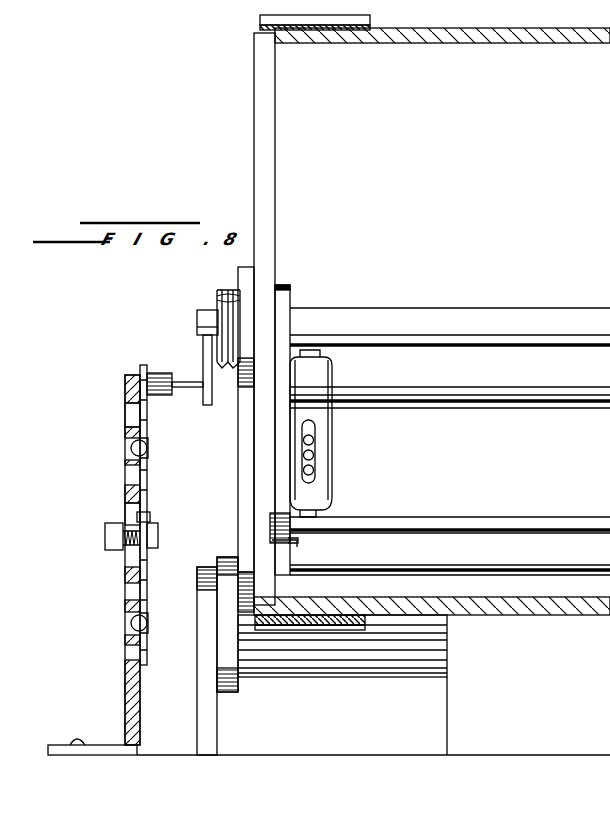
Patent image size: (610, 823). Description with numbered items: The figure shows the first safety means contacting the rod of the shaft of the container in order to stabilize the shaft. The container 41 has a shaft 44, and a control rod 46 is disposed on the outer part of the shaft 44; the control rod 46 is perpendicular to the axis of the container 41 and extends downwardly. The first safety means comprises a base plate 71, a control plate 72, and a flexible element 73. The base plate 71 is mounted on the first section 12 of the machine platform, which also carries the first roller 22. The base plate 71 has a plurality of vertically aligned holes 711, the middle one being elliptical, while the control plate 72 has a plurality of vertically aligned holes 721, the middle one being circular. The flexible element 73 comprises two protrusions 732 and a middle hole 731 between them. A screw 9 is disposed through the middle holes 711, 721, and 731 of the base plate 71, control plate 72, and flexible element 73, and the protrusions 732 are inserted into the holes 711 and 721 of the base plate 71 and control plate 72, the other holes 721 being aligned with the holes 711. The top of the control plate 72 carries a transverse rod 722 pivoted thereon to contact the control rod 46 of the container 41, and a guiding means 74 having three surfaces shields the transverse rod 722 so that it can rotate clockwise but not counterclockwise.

The container 41 is at (434, 36).
The shaft 44 is at (320, 312).
The control rod 46 is at (207, 365).
The guiding means 74 is at (160, 373).
The control plate 72 is at (153, 409).
The transverse rod 722 is at (213, 384).
The holes 711 is at (128, 413).
The protrusions 732 is at (128, 447).
The flexible element 73 is at (152, 483).
The middle hole 731 is at (155, 518).
The holes 721 is at (127, 547).
The screw 9 is at (160, 538).
The base plate 71 is at (125, 700).
The first section 12 is at (165, 757).
The first roller 22 is at (330, 665).